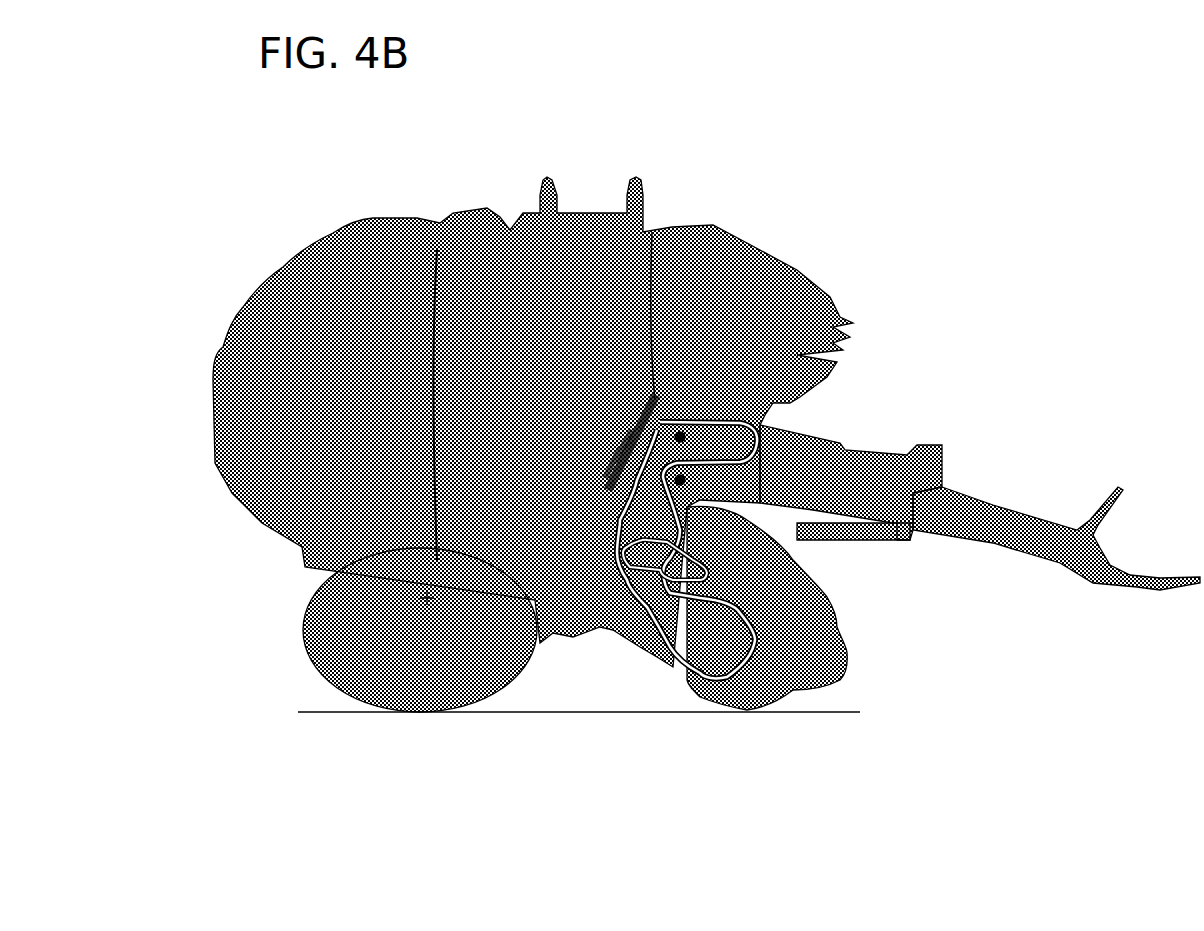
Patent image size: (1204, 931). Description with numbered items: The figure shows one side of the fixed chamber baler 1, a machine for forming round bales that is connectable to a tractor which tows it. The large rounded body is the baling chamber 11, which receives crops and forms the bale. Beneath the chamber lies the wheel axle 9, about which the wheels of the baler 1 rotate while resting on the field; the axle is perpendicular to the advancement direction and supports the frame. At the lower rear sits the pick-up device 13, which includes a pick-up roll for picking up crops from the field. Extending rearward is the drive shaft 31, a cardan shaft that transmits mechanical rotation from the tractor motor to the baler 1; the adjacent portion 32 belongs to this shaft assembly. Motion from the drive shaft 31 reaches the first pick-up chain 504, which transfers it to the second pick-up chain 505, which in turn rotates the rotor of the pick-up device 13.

The baler 1 is at (763, 205).
The baling chamber 11 is at (407, 363).
The wheel axle 9 is at (427, 598).
The pick-up device 13 is at (747, 697).
The drive shaft 31 is at (907, 460).
The second arm portion 32 is at (993, 530).
The first pick-up chain 504 is at (660, 657).
The second pick-up chain 505 is at (623, 500).